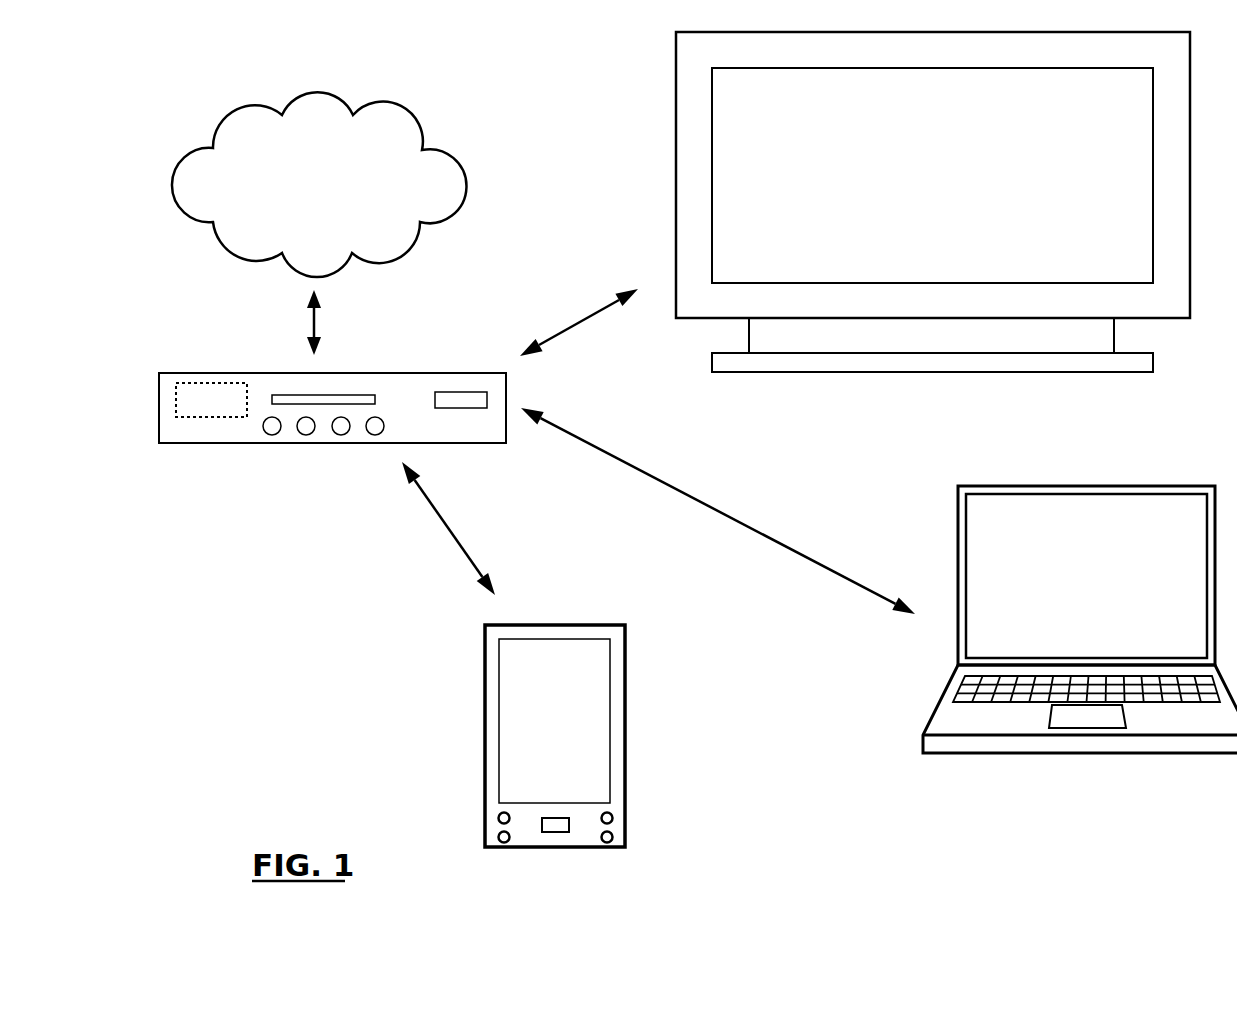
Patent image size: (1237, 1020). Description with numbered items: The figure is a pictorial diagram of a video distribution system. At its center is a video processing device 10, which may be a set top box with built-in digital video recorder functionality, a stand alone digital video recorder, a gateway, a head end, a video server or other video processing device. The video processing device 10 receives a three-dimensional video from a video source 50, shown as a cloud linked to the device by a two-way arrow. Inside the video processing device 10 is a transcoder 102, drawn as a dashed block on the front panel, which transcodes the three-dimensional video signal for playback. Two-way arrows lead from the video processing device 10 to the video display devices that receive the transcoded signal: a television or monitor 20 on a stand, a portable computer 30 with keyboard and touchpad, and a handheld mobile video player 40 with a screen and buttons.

The video processing device 10 is at (397, 409).
The television or monitor 20 is at (1107, 270).
The portable computer 30 is at (943, 727).
The mobile video player 40 is at (568, 781).
The video source 50 is at (319, 184).
The transcoder 102 is at (193, 409).